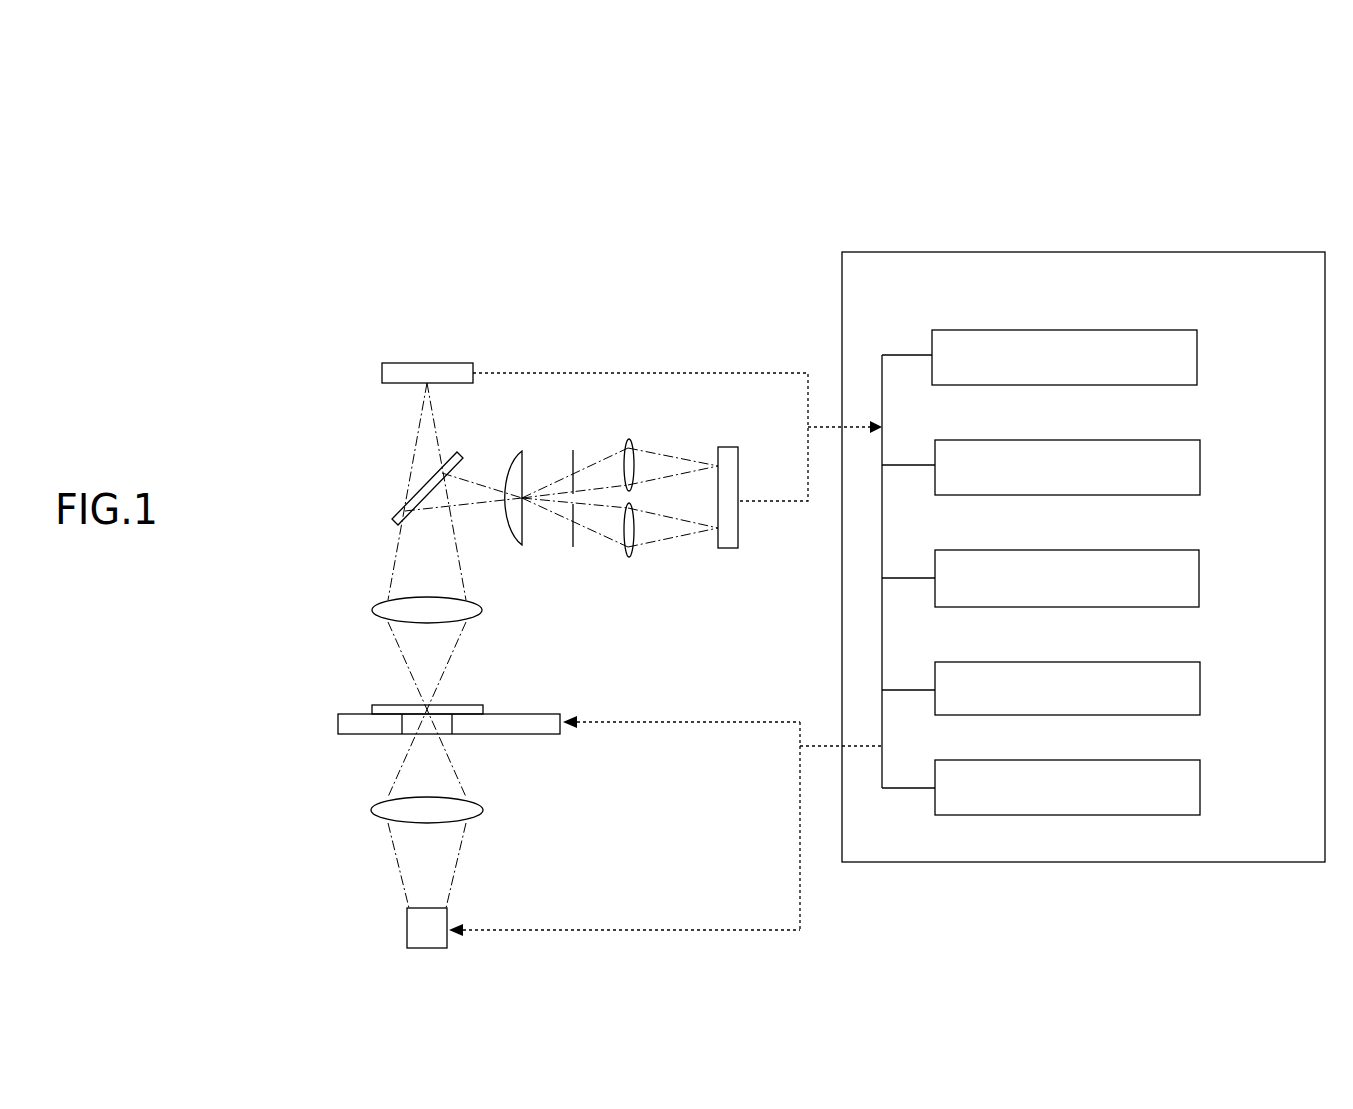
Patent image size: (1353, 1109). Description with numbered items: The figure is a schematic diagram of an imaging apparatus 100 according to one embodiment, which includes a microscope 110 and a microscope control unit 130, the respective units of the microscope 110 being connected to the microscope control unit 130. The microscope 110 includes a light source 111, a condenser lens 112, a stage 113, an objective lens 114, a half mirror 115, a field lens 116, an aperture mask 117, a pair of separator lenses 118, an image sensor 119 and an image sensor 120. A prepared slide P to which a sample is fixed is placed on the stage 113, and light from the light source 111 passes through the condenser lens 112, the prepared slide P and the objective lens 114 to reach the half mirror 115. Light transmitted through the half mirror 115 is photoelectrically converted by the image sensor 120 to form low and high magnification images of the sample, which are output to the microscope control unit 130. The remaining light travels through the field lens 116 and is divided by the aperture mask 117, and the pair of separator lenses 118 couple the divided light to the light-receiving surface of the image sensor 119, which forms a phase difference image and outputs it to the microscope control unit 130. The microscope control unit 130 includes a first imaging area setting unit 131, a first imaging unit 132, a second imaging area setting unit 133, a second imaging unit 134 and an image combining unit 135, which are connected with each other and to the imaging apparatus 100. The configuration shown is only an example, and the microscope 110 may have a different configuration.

The imaging apparatus 100 is at (458, 188).
The microscope 110 is at (285, 325).
The light source 111 is at (407, 930).
The condenser lens 112 is at (372, 810).
The stage 113 is at (338, 718).
The objective lens 114 is at (372, 610).
The half mirror 115 is at (395, 492).
The field lens 116 is at (525, 545).
The aperture mask 117 is at (573, 547).
The separator lenses 118 is at (628, 440).
The image sensor 119 is at (728, 548).
The image sensor 120 is at (382, 367).
The microscope control unit 130 is at (842, 290).
The first imaging area setting unit 131 is at (1200, 355).
The first imaging unit 132 is at (1203, 462).
The second imaging area setting unit 133 is at (1203, 575).
The second imaging unit 134 is at (1203, 688).
The image combining unit 135 is at (1203, 788).
The prepared slide P is at (385, 705).